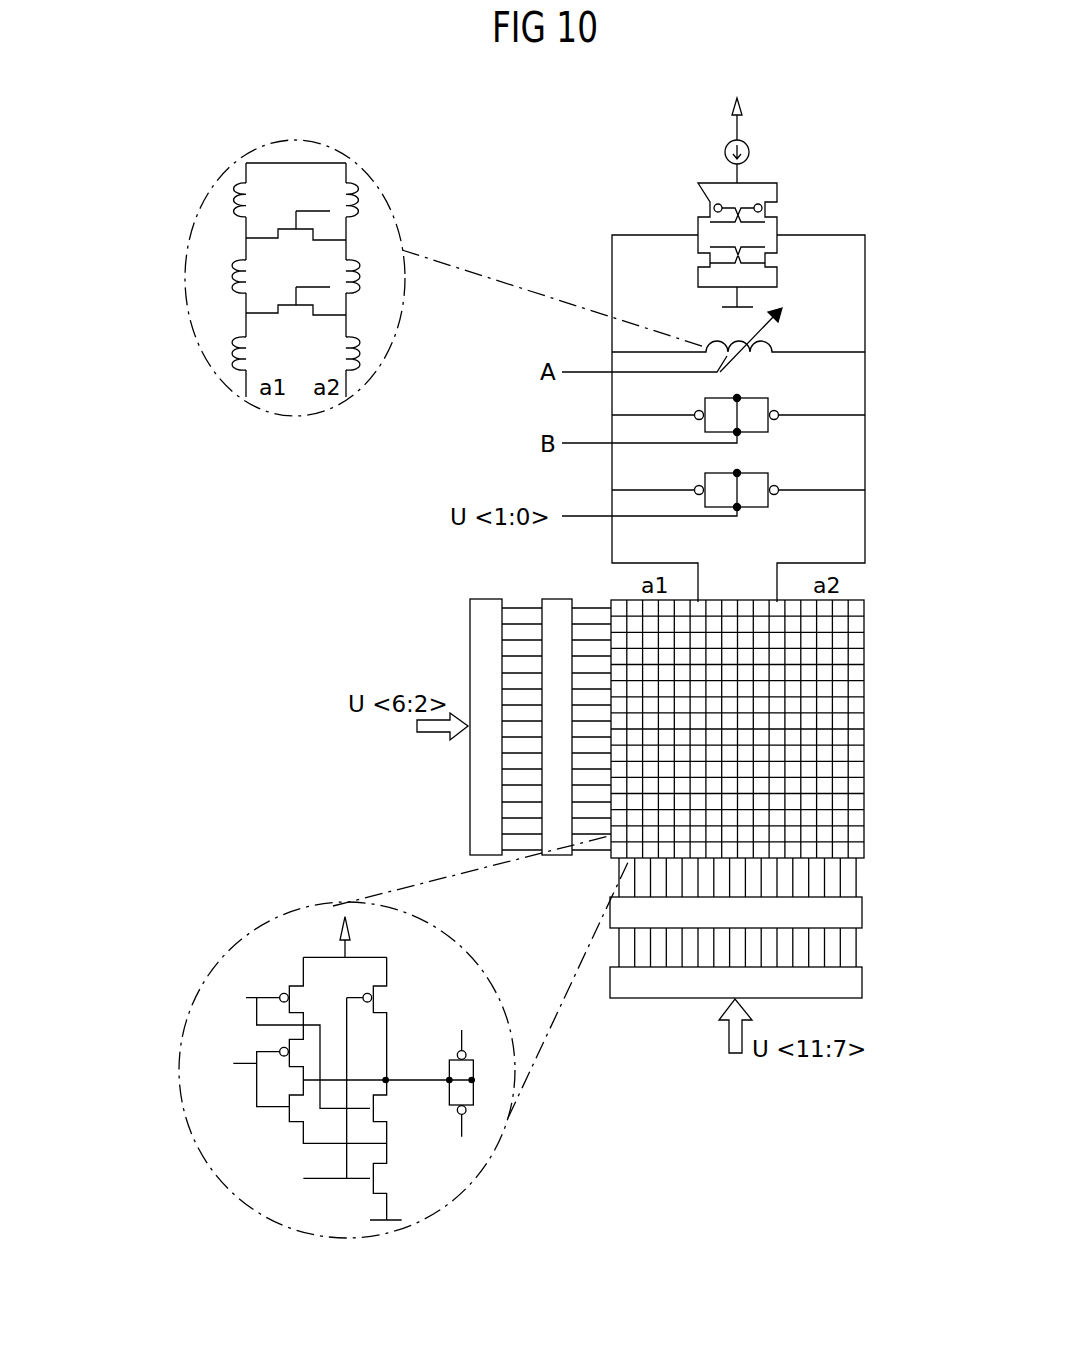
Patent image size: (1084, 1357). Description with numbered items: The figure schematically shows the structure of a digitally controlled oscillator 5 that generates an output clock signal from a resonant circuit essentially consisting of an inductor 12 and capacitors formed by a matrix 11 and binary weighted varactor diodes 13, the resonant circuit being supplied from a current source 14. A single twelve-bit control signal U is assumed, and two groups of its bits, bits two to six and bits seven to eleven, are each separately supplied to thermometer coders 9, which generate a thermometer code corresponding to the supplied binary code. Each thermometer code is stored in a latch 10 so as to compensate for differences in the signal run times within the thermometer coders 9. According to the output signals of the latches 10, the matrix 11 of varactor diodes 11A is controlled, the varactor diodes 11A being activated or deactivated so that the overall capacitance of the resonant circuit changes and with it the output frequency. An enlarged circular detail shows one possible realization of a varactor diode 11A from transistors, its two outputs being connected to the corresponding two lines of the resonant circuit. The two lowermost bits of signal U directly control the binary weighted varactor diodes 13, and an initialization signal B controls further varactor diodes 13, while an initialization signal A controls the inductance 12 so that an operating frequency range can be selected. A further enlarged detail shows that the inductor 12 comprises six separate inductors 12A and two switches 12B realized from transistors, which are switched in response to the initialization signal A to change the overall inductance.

The digitally controlled oscillator 5 is at (354, 523).
The thermometer coder 9 is at (470, 617).
The latch 10 is at (557, 599).
The matrix of varactor diodes 11 is at (866, 662).
The varactor diode 11A is at (277, 1131).
The inductor 12 is at (776, 346).
The separate inductor 12A is at (236, 198).
The switch 12B is at (313, 211).
The binary weighted varactor diode 13 is at (770, 400).
The current source 14 is at (761, 180).